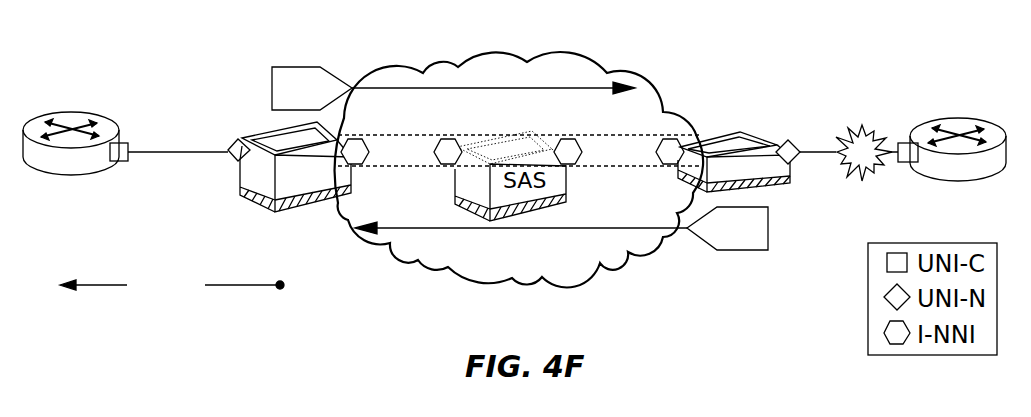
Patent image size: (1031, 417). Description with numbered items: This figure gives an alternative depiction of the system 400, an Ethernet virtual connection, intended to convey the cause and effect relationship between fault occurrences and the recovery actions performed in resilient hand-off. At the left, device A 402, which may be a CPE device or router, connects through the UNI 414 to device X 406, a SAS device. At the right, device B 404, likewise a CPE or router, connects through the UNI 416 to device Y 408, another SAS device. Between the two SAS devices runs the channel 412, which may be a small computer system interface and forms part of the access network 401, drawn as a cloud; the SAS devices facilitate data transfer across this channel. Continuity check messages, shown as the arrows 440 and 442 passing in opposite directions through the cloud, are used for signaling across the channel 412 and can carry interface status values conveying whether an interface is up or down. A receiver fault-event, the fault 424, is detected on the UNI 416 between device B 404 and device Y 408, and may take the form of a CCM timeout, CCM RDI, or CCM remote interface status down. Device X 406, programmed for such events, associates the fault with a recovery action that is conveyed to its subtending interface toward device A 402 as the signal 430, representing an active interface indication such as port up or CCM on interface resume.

The system 400 is at (806, 44).
The access network 401 is at (494, 52).
The device A 402 is at (92, 177).
The device B 404 is at (938, 183).
The device X 406 is at (302, 207).
The device Y 408 is at (722, 133).
The channel 412 is at (647, 170).
The UNI 414 is at (183, 155).
The UNI 416 is at (815, 150).
The fault 424 is at (870, 183).
The signal 430 is at (105, 283).
The CCM message forward 440 is at (545, 93).
The CCM message reverse 442 is at (450, 227).